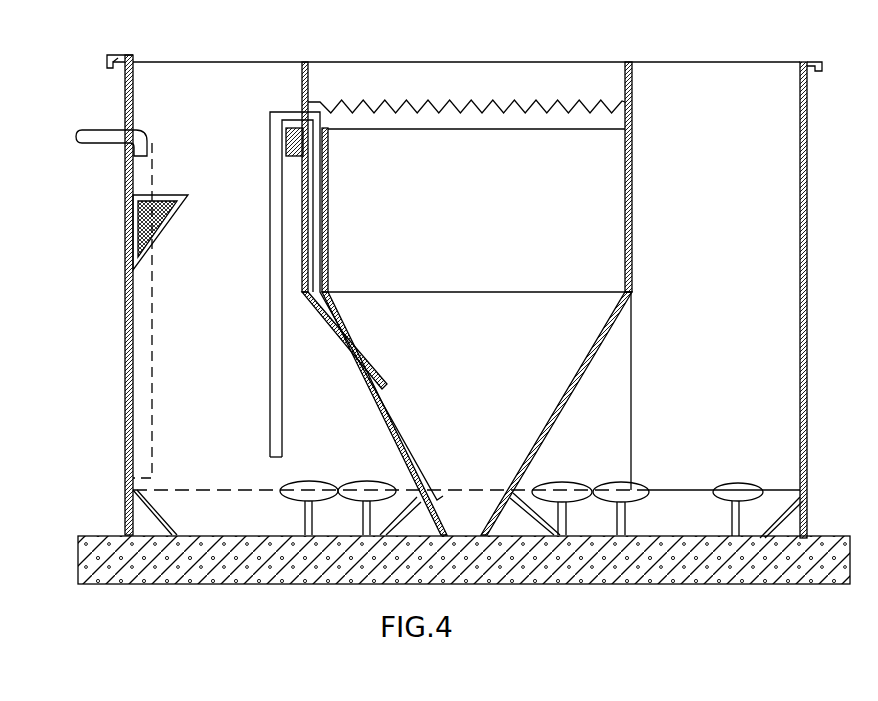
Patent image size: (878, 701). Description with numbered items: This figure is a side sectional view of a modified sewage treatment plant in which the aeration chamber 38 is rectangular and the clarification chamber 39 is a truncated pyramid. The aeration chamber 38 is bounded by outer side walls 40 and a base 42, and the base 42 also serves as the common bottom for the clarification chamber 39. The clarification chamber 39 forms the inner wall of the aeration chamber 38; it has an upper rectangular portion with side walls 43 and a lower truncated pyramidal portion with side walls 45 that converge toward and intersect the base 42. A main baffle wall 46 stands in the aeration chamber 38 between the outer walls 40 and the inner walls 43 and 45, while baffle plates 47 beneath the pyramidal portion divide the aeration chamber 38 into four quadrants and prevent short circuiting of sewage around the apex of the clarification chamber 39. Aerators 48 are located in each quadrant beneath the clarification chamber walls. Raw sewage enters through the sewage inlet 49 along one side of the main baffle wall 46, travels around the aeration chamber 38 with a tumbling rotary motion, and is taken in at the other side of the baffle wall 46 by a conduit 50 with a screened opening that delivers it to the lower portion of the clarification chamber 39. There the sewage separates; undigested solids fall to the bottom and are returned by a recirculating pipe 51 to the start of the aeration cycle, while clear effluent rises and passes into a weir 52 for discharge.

The aeration chamber 38 is at (736, 168).
The clarification chamber 39 is at (510, 214).
The outer side walls 40 is at (128, 262).
The base 42 is at (695, 545).
The side walls 43 is at (322, 212).
The side walls 45 is at (360, 388).
The main baffle wall 46 is at (201, 277).
The baffle plates 47 is at (614, 384).
The aerators 48 is at (365, 482).
The sewage inlet 49 is at (96, 130).
The conduit 50 is at (294, 128).
The recirculating pipe 51 is at (270, 360).
The weir 52 is at (446, 122).